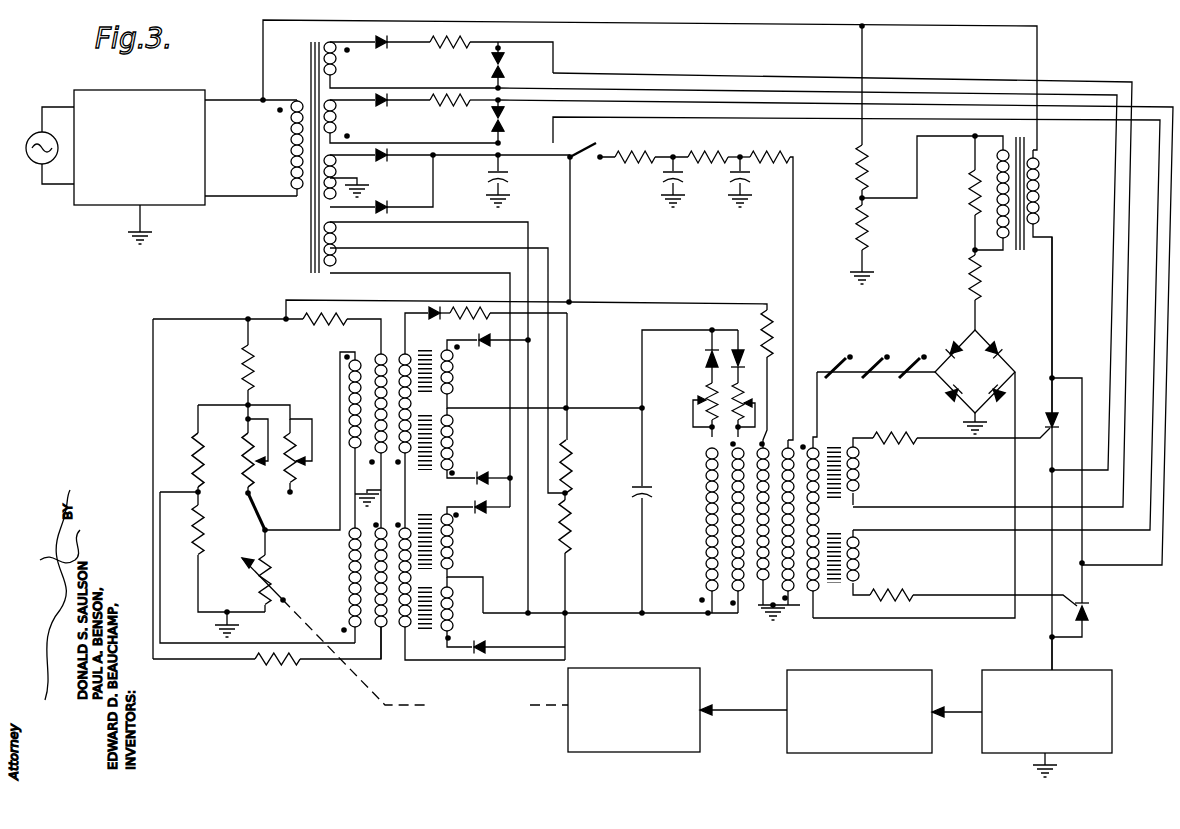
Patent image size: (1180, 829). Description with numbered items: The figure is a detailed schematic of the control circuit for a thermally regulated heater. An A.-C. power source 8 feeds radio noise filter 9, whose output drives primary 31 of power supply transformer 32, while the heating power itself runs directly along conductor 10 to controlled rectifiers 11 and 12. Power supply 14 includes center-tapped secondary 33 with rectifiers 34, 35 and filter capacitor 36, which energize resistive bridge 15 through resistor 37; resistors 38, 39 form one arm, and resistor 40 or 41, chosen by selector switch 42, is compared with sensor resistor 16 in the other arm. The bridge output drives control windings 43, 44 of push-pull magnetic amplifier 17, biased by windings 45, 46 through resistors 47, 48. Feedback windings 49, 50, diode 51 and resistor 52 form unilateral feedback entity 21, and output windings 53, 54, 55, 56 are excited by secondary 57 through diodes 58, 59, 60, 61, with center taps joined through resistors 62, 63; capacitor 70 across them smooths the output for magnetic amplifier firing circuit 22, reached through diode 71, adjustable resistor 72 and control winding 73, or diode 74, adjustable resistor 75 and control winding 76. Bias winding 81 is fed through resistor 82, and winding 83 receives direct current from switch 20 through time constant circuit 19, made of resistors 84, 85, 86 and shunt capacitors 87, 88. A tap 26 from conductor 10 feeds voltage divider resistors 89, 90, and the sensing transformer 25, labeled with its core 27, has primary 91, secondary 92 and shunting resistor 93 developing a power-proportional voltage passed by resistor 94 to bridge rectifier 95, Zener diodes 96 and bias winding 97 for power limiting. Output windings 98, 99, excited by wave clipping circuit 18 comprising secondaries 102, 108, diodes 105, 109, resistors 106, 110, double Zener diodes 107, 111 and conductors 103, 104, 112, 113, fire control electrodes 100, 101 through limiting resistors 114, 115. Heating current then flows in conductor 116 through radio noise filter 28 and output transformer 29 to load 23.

The A.-C. power source 8 is at (48, 133).
The radio noise filter 9 is at (190, 96).
The conductor 10 is at (787, 30).
The controlled rectifier 11 is at (1090, 608).
The controlled rectifier 12 is at (1049, 412).
The power supply 14 is at (413, 327).
The resistive bridge 15 is at (298, 378).
The sensor resistor 16 is at (268, 573).
The push-pull magnetic amplifier 17 is at (397, 489).
The wave clipping circuit 18 is at (429, 83).
The time constant circuit 19 is at (715, 228).
The switch 20 is at (593, 148).
The unilateral feedback entity 21 is at (448, 302).
The magnetic amplifier firing circuit 22 is at (862, 517).
The load 23 is at (668, 668).
The transformer 25 is at (1025, 313).
The conductor 26 is at (864, 68).
The transformer 27 is at (1019, 250).
The radio noise filter 28 is at (1033, 672).
The output transformer 29 is at (876, 668).
The primary 31 is at (295, 98).
The power supply transformer 32 is at (309, 262).
The secondary 33 is at (334, 160).
The rectifier 34 is at (391, 162).
The rectifier 35 is at (391, 204).
The filter capacitor 36 is at (509, 178).
The resistor 37 is at (243, 363).
The resistor 38 is at (193, 449).
The resistor 39 is at (203, 529).
The resistor 40 is at (243, 457).
The resistor 41 is at (294, 476).
The selector switch 42 is at (263, 514).
The control winding 43 is at (350, 383).
The control winding 44 is at (349, 585).
The bias winding 45 is at (375, 352).
The bias winding 46 is at (374, 630).
The resistor 47 is at (322, 327).
The resistor 48 is at (290, 664).
The feedback winding 49 is at (405, 352).
The feedback winding 50 is at (410, 644).
The diode 51 is at (428, 313).
The resistor 52 is at (489, 310).
The output winding 53 is at (454, 378).
The output winding 54 is at (454, 443).
The output winding 55 is at (454, 545).
The output winding 56 is at (454, 604).
The secondary 57 is at (337, 230).
The diode 58 is at (482, 345).
The diode 59 is at (480, 472).
The diode 60 is at (486, 509).
The diode 61 is at (486, 647).
The resistor 62 is at (569, 458).
The resistor 63 is at (569, 520).
The capacitor 70 is at (646, 488).
The diode 71 is at (705, 356).
The adjustable resistor 72 is at (706, 392).
The control winding 73 is at (706, 458).
The diode 74 is at (738, 354).
The adjustable resistor 75 is at (740, 393).
The control winding 76 is at (735, 434).
The bias winding 81 is at (778, 432).
The resistor 82 is at (761, 324).
The winding 83 is at (789, 444).
The resistor 84 is at (647, 152).
The resistor 85 is at (720, 152).
The resistor 86 is at (783, 152).
The shunt capacitor 87 is at (684, 182).
The shunt capacitor 88 is at (751, 182).
The resistor 89 is at (866, 172).
The resistor 90 is at (866, 234).
The primary 91 is at (1039, 166).
The secondary 92 is at (1003, 140).
The shunting resistor 93 is at (970, 181).
The resistor 94 is at (970, 272).
The bridge rectifier 95 is at (984, 383).
The Zener diodes 96 is at (897, 356).
The bias winding 97 is at (814, 444).
The output winding 98 is at (859, 467).
The output winding 99 is at (859, 547).
The control electrode 100 is at (1046, 440).
The control electrode 101 is at (1078, 600).
The secondary 102 is at (342, 58).
The conductor 103 is at (603, 79).
The conductor 104 is at (664, 88).
The diode 105 is at (393, 46).
The resistor 106 is at (472, 45).
The double Zener diode 107 is at (512, 68).
The secondary 108 is at (411, 121).
The diode 109 is at (398, 108).
The resistor 110 is at (440, 107).
The double Zener diode 111 is at (508, 126).
The conductor 112 is at (663, 105).
The conductor 113 is at (774, 117).
The limiting resistor 114 is at (900, 434).
The resistor 115 is at (900, 595).
The conductor 116 is at (1052, 658).